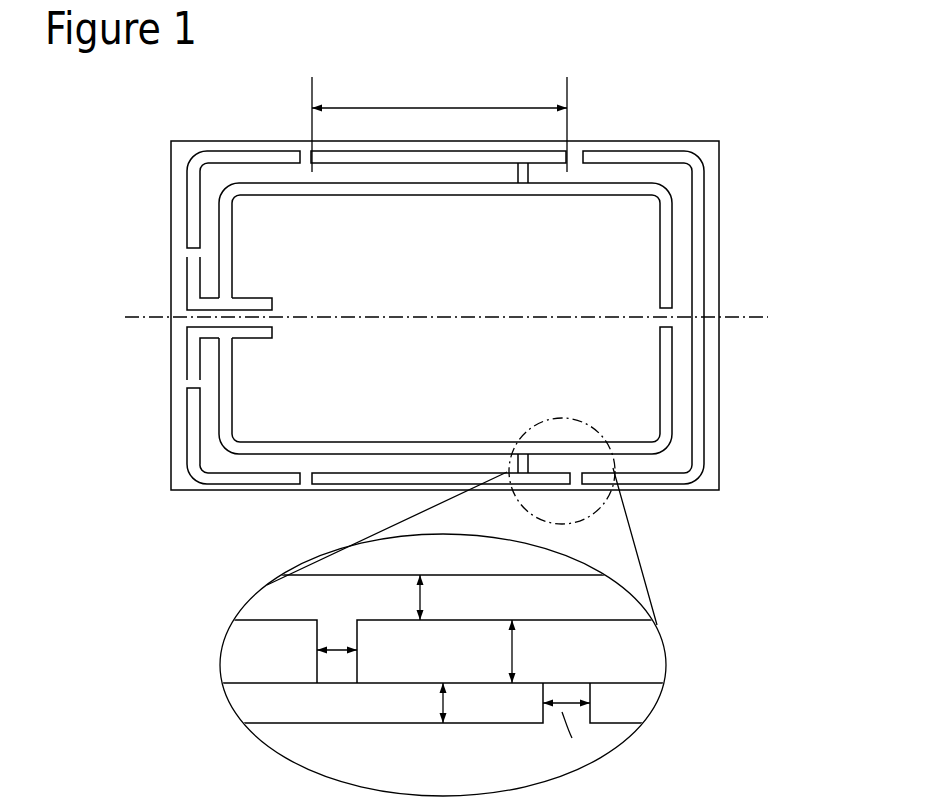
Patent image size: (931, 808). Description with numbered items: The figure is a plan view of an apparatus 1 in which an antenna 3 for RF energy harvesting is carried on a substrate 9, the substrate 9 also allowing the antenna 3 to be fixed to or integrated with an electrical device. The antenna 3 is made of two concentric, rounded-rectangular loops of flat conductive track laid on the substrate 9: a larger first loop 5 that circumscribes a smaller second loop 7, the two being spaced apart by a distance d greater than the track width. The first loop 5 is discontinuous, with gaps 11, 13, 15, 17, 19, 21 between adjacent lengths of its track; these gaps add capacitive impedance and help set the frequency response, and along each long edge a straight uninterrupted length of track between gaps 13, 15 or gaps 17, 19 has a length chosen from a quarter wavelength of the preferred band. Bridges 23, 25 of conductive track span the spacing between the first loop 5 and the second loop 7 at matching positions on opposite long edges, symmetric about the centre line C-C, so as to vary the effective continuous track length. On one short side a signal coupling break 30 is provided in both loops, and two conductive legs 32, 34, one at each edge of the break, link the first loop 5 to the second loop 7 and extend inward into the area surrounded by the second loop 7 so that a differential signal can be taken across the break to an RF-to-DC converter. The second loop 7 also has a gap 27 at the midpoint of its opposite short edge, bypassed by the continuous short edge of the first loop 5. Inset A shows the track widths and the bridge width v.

The apparatus 1 is at (750, 247).
The antenna 3 is at (174, 474).
The first loop 5 is at (441, 316).
The second loop 7 is at (445, 318).
The substrate 9 is at (441, 316).
The gap 11 is at (190, 252).
The gap 13 is at (306, 162).
The gap 15 is at (577, 160).
The gap 17 is at (306, 484).
The gap 19 is at (577, 482).
The gap 21 is at (190, 388).
The bridge 23 is at (517, 176).
The bridge 25 is at (520, 456).
The gap in inner loop 27 is at (665, 313).
The signal coupling break 30 is at (190, 332).
The conductive leg 32 is at (260, 304).
The conductive leg 34 is at (258, 343).